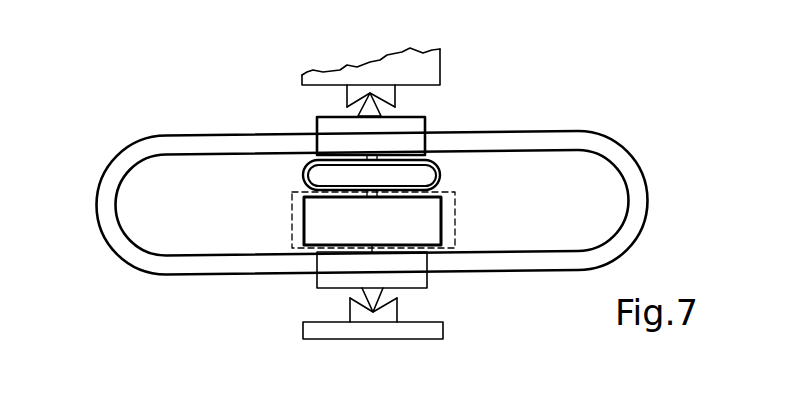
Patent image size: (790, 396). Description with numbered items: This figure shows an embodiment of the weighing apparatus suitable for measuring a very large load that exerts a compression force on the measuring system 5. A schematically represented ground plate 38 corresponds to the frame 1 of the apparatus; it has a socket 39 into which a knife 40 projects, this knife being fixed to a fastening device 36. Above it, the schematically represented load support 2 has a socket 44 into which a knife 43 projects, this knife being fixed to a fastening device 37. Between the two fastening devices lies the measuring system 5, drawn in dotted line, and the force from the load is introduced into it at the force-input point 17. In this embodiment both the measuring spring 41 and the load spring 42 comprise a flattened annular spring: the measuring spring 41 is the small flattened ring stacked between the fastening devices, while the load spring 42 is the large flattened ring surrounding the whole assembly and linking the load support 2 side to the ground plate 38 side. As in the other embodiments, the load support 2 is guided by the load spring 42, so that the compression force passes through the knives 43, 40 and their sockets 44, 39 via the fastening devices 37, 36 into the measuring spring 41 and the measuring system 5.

The frame 1 is at (267, 250).
The load support 2 is at (390, 72).
The measuring system 5 is at (337, 230).
The force-input point 17 is at (372, 173).
The fastening device 36 is at (390, 275).
The fastening device 37 is at (390, 130).
The ground plate 38 is at (427, 330).
The socket 39 is at (387, 312).
The knife 40 is at (386, 310).
The measuring spring 41 is at (440, 175).
The load spring 42 is at (130, 158).
The knife 43 is at (362, 108).
The socket 44 is at (385, 63).